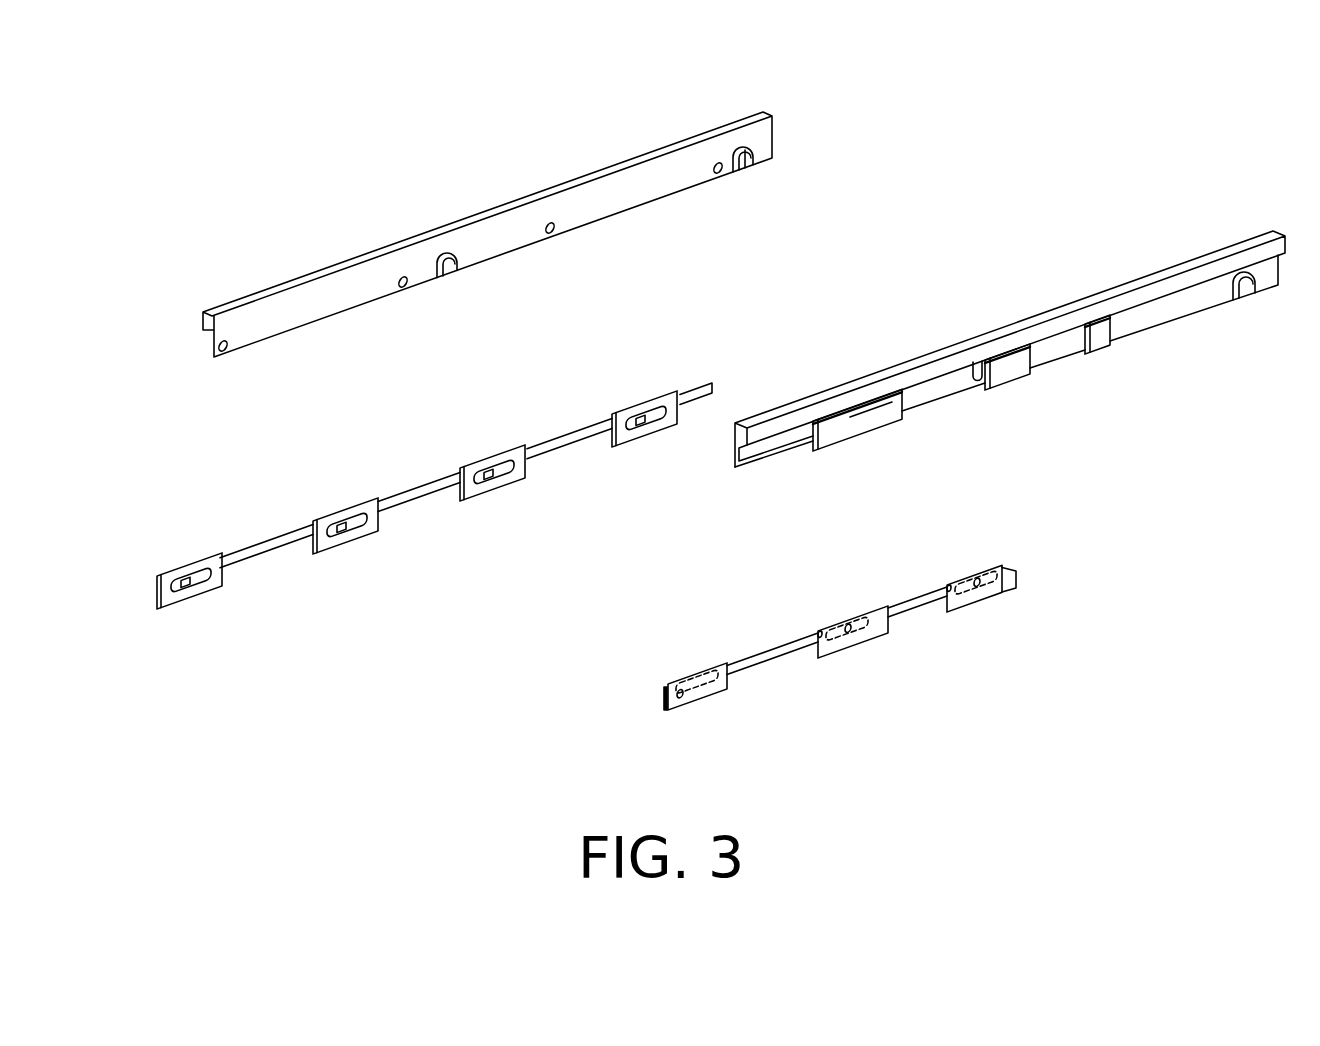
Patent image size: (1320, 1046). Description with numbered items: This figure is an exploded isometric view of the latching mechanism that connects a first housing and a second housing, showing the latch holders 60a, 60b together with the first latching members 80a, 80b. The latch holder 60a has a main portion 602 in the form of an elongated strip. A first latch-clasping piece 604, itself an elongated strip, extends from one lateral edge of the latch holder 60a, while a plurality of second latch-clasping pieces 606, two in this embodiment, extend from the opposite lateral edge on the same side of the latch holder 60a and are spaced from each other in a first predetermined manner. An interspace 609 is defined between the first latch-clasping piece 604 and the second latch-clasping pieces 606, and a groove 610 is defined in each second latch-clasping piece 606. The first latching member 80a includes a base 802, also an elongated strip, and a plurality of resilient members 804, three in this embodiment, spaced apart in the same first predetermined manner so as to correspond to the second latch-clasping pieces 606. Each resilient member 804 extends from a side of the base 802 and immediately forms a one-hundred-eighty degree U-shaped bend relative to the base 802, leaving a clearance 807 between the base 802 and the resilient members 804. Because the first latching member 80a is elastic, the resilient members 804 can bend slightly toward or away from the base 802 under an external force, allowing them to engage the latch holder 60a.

The latch holder 60a is at (1017, 332).
The latch holder 60b is at (317, 298).
The main portion 602 is at (933, 357).
The first latch-clasping piece 604 is at (743, 448).
The second latch-clasping pieces 606 is at (811, 434).
The interspace 609 is at (977, 365).
The groove 610 is at (888, 412).
The first latching member 80a is at (838, 621).
The first latching member 80b is at (407, 502).
The base 802 is at (777, 662).
The resilient members 804 is at (786, 638).
The clearance 807 is at (665, 712).